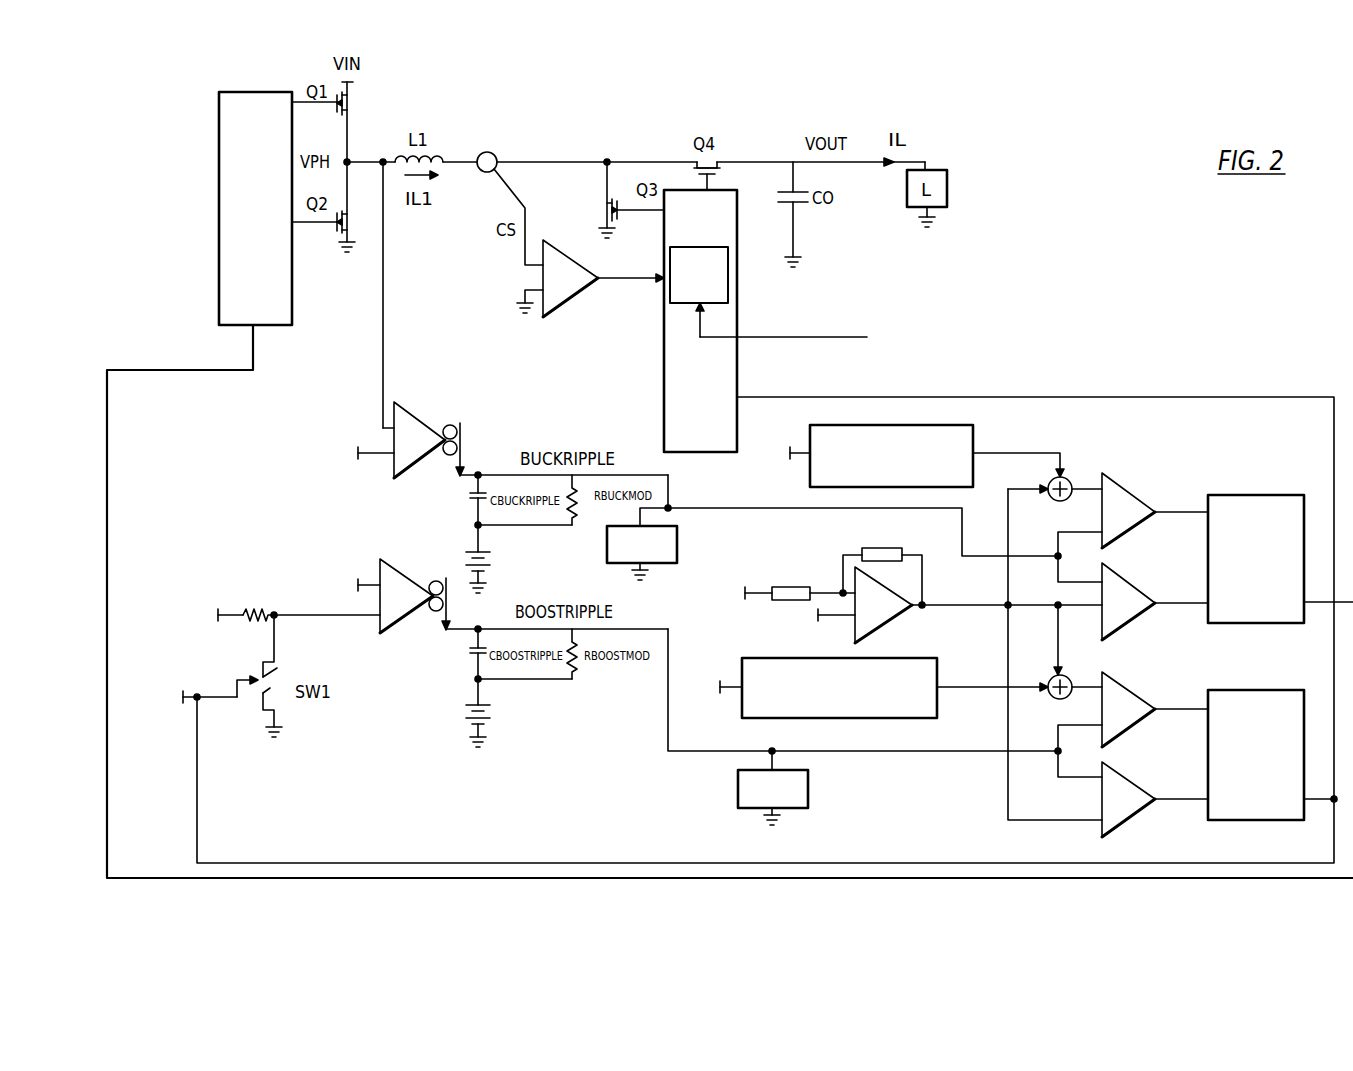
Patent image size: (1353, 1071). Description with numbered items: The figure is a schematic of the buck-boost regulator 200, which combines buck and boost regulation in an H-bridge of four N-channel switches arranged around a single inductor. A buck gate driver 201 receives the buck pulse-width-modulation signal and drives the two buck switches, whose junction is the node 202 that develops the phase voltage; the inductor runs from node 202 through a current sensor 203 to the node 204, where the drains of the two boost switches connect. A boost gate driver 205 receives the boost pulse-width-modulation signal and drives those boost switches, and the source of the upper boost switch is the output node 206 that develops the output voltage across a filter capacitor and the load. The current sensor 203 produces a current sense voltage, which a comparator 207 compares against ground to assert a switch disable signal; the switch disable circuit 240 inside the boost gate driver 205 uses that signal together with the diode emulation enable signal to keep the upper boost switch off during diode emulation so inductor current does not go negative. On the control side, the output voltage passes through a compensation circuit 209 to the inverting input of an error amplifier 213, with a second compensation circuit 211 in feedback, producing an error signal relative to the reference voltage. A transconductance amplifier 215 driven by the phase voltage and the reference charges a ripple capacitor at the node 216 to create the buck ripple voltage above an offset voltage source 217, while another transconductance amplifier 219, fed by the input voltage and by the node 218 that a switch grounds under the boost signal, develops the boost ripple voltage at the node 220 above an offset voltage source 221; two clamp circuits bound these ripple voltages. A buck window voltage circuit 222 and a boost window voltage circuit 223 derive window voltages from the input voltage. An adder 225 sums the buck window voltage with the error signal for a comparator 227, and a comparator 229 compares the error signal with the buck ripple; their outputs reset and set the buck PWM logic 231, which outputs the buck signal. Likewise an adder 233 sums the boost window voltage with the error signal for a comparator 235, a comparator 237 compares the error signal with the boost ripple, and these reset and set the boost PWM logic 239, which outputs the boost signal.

The buck-boost regulator 200 is at (1088, 182).
The buck gate driver 201 is at (271, 226).
The node 202 is at (352, 157).
The current sensor 203 is at (492, 153).
The node 204 is at (565, 155).
The boost gate driver 205 is at (765, 321).
The output node 206 is at (727, 160).
The comparator 207 is at (565, 240).
The compensation circuit 209 is at (797, 585).
The compensation circuit 211 is at (870, 548).
The error amplifier 213 is at (890, 622).
The transconductance amplifier 215 is at (425, 422).
The node 216 is at (747, 513).
The offset voltage source 217 is at (488, 553).
The node 218 is at (276, 610).
The transconductance amplifier 219 is at (413, 578).
The node 220 is at (713, 755).
The offset voltage source 221 is at (488, 706).
The buck window voltage circuit 222 is at (845, 425).
The boost window voltage circuit 223 is at (929, 713).
The adder 225 is at (1070, 479).
The comparator 227 is at (1133, 495).
The comparator 229 is at (1138, 590).
The buck PWM logic 231 is at (1222, 495).
The adder 233 is at (1070, 677).
The comparator 235 is at (1133, 692).
The comparator 237 is at (1138, 786).
The boost PWM logic 239 is at (1222, 690).
The switch disable circuit 240 is at (728, 268).